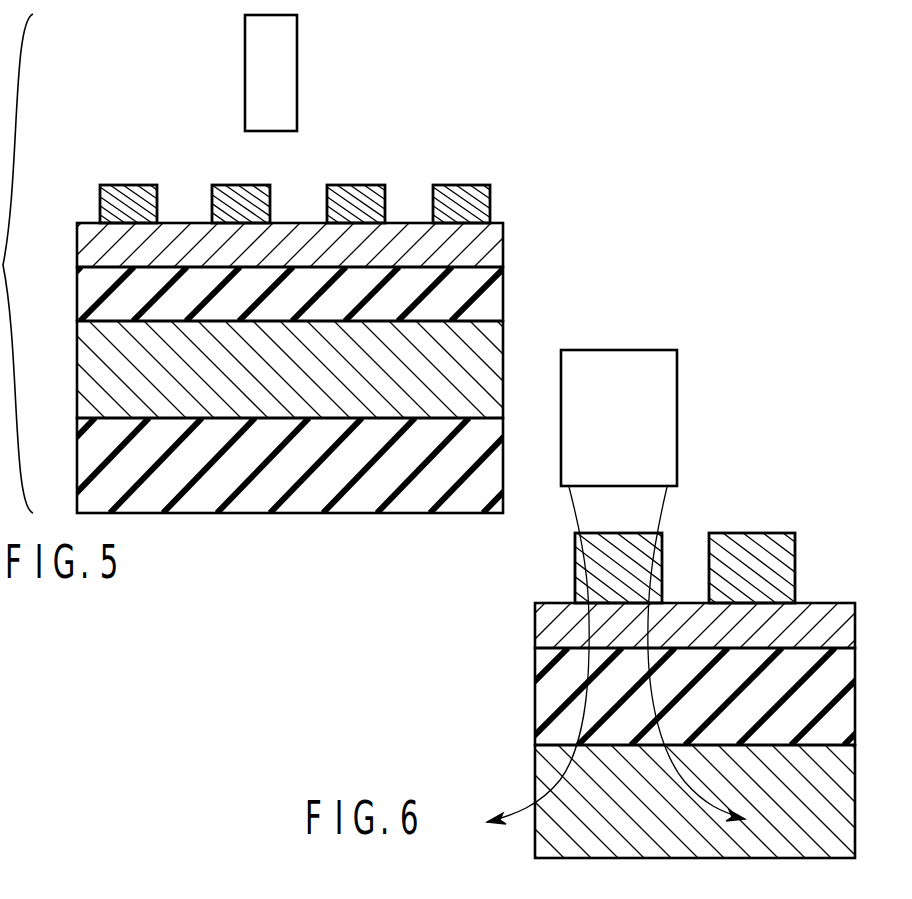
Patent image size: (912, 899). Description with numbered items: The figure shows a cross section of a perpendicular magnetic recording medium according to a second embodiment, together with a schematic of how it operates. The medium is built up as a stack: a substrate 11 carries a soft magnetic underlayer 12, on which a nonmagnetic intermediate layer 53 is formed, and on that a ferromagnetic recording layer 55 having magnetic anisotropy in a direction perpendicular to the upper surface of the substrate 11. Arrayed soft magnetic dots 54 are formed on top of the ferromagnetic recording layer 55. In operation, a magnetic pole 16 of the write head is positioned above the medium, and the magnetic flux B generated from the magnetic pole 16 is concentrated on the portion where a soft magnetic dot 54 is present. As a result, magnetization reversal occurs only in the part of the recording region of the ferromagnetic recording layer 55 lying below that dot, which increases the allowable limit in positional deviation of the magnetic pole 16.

In FIG. 5, the substrate 11 is at (79, 464).
In FIG. 5, the soft magnetic underlayer 12 is at (79, 379).
In FIG. 6, the soft magnetic underlayer 12 is at (537, 767).
In FIG. 5, the magnetic pole 16 is at (298, 61).
In FIG. 6, the magnetic pole 16 is at (678, 397).
In FIG. 5, the nonmagnetic intermediate layer 53 is at (79, 298).
In FIG. 6, the nonmagnetic intermediate layer 53 is at (537, 705).
In FIG. 5, the soft magnetic dots 54 is at (130, 186).
In FIG. 6, the soft magnetic dots 54 is at (578, 577).
In FIG. 5, the ferromagnetic recording layer 55 is at (79, 244).
In FIG. 6, the ferromagnetic recording layer 55 is at (537, 623).
In FIG. 6, the magnetic flux B is at (663, 510).